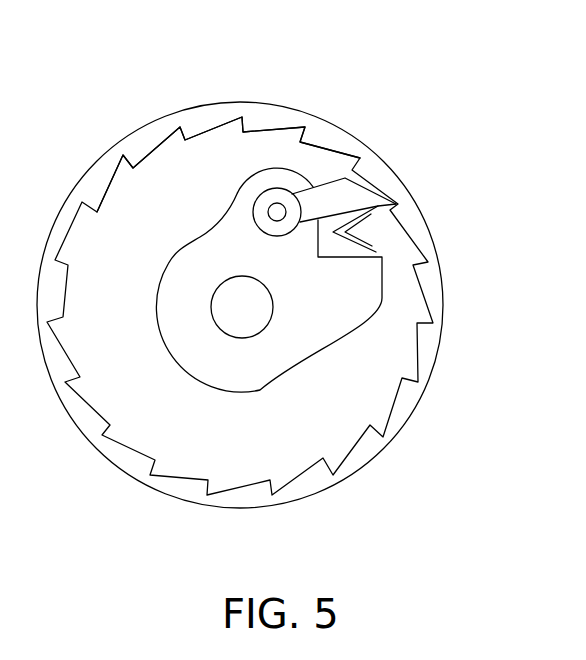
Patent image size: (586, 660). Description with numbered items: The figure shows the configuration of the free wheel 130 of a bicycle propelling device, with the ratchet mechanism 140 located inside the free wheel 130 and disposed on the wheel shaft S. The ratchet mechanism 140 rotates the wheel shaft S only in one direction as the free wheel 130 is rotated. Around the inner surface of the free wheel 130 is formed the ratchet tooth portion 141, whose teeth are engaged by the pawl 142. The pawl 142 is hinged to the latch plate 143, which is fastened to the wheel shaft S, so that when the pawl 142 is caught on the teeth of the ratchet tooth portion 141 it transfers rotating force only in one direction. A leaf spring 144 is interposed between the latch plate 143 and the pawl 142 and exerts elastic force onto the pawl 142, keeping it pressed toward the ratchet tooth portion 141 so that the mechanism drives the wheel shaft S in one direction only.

The free wheel 130 is at (318, 119).
The ratchet mechanism 140 is at (368, 379).
The ratchet tooth portion 141 is at (263, 128).
The pawl 142 is at (345, 200).
The latch plate 143 is at (277, 352).
The leaf spring 144 is at (393, 208).
The wheel shaft S is at (240, 307).